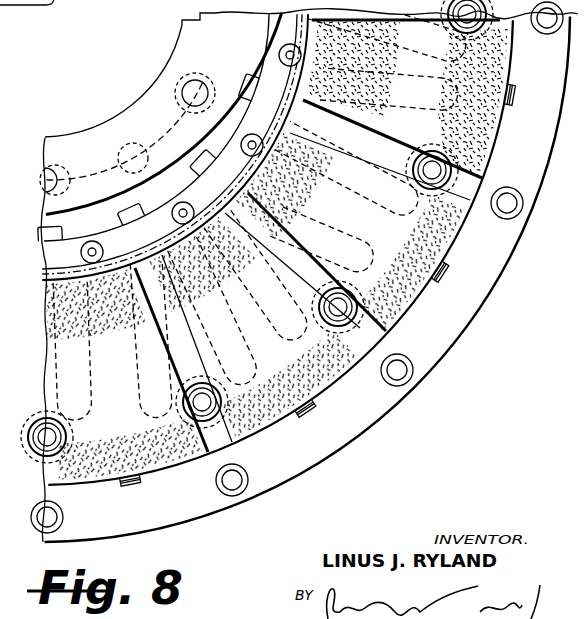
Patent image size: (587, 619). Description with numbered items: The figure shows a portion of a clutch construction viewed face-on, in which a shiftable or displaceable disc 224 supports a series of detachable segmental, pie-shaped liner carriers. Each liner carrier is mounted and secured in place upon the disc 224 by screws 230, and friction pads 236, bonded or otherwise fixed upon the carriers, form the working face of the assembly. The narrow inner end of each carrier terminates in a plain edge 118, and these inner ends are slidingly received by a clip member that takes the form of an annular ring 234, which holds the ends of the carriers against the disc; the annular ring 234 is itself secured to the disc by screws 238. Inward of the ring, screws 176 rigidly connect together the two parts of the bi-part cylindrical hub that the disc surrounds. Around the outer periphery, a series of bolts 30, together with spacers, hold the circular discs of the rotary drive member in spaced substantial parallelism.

The bolts 30 is at (510, 212).
The plain edge 118 is at (178, 236).
The screws 176 is at (190, 103).
The displaceable disc 224 is at (47, 330).
The screws 230 is at (510, 103).
The annular ring clip member 234 is at (54, 264).
The friction pads 236 is at (477, 78).
The screws 238 is at (279, 53).